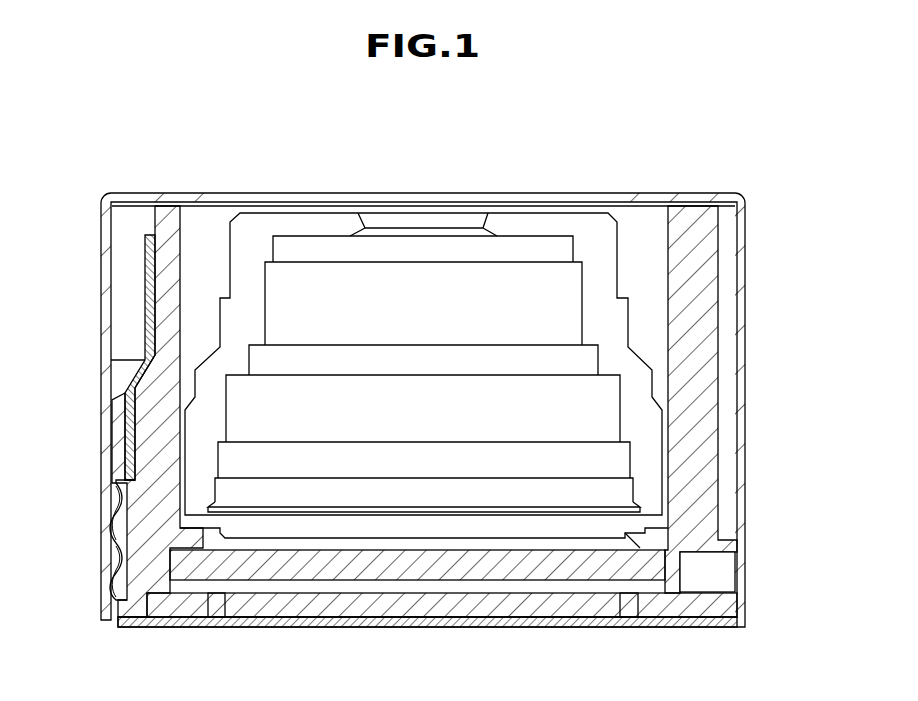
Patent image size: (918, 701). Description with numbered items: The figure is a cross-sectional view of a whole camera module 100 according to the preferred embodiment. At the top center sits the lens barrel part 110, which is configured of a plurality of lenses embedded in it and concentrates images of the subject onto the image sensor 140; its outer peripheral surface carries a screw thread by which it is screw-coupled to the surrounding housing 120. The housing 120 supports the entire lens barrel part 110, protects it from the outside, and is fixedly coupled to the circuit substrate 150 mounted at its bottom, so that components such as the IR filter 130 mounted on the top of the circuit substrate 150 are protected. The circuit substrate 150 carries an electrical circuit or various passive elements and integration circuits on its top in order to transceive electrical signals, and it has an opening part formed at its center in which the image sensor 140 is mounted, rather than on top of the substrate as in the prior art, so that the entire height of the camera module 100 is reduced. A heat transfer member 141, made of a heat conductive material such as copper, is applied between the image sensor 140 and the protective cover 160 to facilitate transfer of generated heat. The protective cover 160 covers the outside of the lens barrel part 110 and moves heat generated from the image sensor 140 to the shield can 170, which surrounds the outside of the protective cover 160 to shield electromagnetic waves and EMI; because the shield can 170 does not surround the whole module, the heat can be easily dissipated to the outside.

The camera module 100 is at (101, 138).
The lens barrel part 110 is at (540, 245).
The housing 120 is at (705, 305).
The IR filter 130 is at (598, 533).
The image sensor 140 is at (490, 630).
The heat transfer member 141 is at (222, 628).
The circuit substrate 150 is at (680, 628).
The protective cover 160 is at (115, 508).
The shield can 170 is at (108, 580).